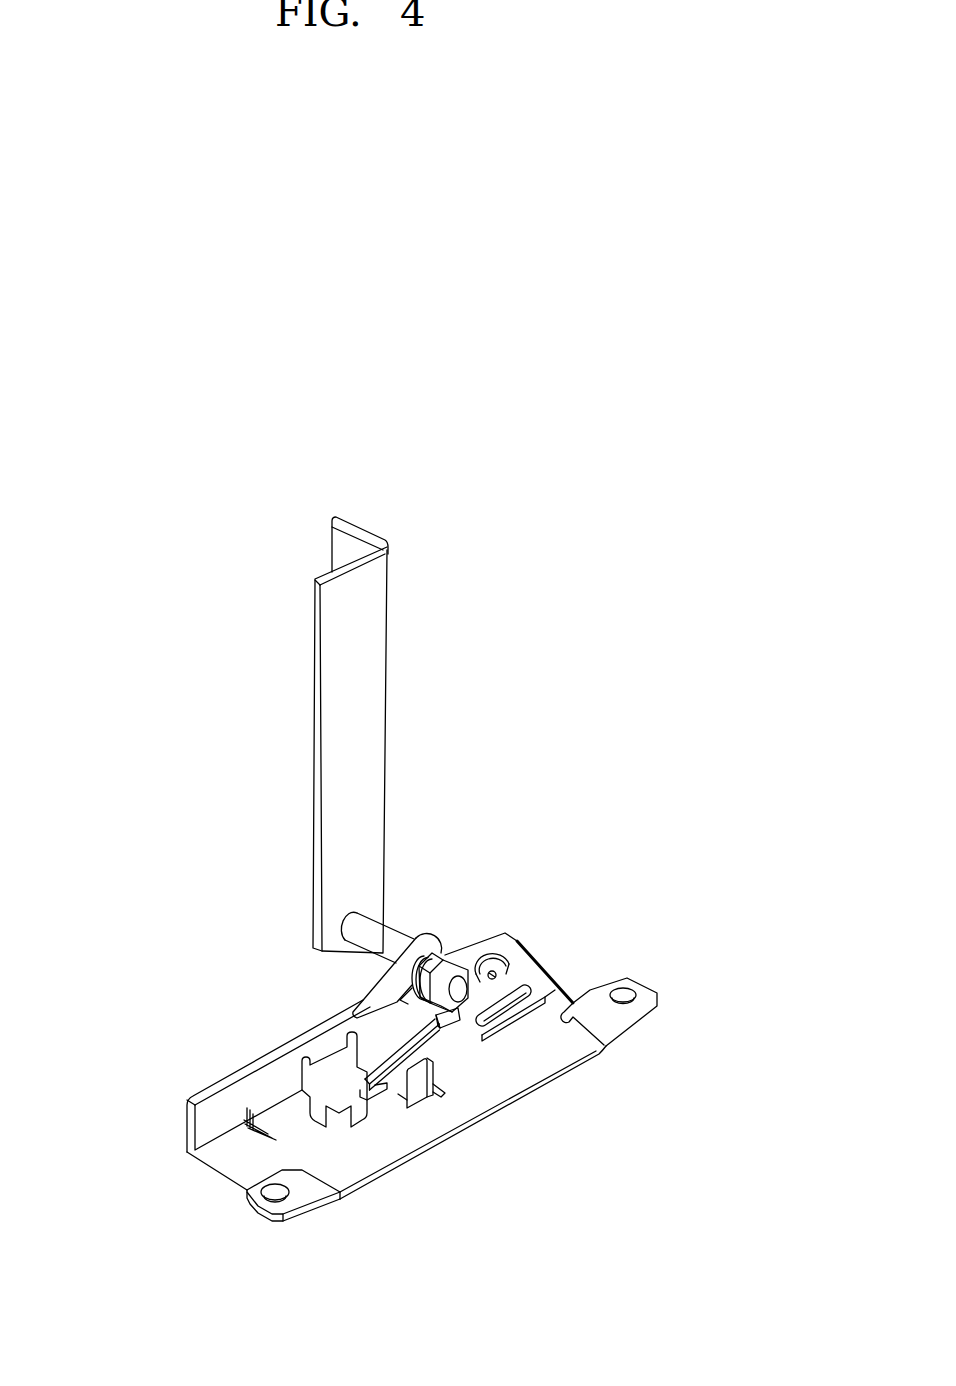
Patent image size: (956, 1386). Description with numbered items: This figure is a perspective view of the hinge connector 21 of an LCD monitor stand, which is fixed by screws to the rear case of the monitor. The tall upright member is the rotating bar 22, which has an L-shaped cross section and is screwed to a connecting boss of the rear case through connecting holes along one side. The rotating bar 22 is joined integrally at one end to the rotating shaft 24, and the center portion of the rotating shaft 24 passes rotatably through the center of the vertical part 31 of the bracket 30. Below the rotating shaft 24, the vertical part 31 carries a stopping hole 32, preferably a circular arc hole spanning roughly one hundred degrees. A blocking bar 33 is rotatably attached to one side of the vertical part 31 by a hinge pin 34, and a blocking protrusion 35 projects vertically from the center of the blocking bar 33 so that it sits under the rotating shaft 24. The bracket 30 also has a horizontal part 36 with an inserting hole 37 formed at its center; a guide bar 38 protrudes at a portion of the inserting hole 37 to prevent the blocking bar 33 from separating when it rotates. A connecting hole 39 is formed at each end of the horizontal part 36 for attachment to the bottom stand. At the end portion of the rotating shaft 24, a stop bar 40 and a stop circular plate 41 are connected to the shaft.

The hinge connector 21 is at (510, 868).
The rotating bar 22 is at (372, 631).
The rotating shaft 24 is at (387, 935).
The bracket 30 is at (207, 1180).
The vertical part 31 is at (208, 1118).
The stopping hole 32 is at (393, 1013).
The blocking bar 33 is at (533, 985).
The hinge pin 34 is at (497, 968).
The blocking protrusion 35 is at (458, 1030).
The horizontal part 36 is at (285, 1115).
The inserting hole 37 is at (398, 1107).
The guide bar 38 is at (423, 1083).
The connecting hole 39 is at (275, 1196).
The stop bar 40 is at (380, 1006).
The stop circular plate 41 is at (452, 1018).